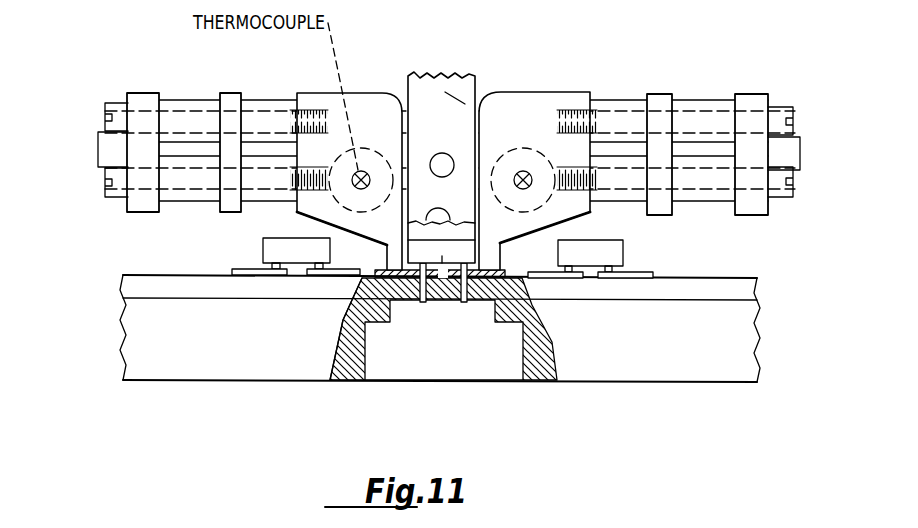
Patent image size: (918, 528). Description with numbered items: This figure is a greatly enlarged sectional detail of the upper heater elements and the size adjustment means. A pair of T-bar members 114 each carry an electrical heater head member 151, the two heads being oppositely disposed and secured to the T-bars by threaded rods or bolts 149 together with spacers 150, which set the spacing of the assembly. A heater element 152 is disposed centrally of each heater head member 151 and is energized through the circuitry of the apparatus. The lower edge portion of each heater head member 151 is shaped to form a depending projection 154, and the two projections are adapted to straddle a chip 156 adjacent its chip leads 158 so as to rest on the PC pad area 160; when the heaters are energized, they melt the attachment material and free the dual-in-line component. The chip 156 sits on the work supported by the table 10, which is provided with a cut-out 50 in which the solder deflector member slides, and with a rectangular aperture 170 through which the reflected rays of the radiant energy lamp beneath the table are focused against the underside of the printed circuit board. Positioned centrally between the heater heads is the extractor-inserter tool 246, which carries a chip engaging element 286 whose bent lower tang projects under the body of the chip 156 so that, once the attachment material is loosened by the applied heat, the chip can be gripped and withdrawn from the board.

The table 10 is at (748, 343).
The cut-out 50 is at (368, 368).
The T-bar member 114 is at (98, 152).
The threaded rods or bolts 149 is at (105, 106).
The spacers 150 is at (185, 103).
The electrical heater head member 151 is at (315, 102).
The heater element 152 is at (365, 148).
The depending projection 154 is at (393, 252).
The chip 156 is at (268, 243).
The chip leads 158 is at (423, 302).
The PC pad area 160 is at (232, 269).
The rectangular aperture 170 is at (498, 318).
The extractor-inserter tool 246 is at (430, 70).
The chip engaging element 286 is at (457, 98).